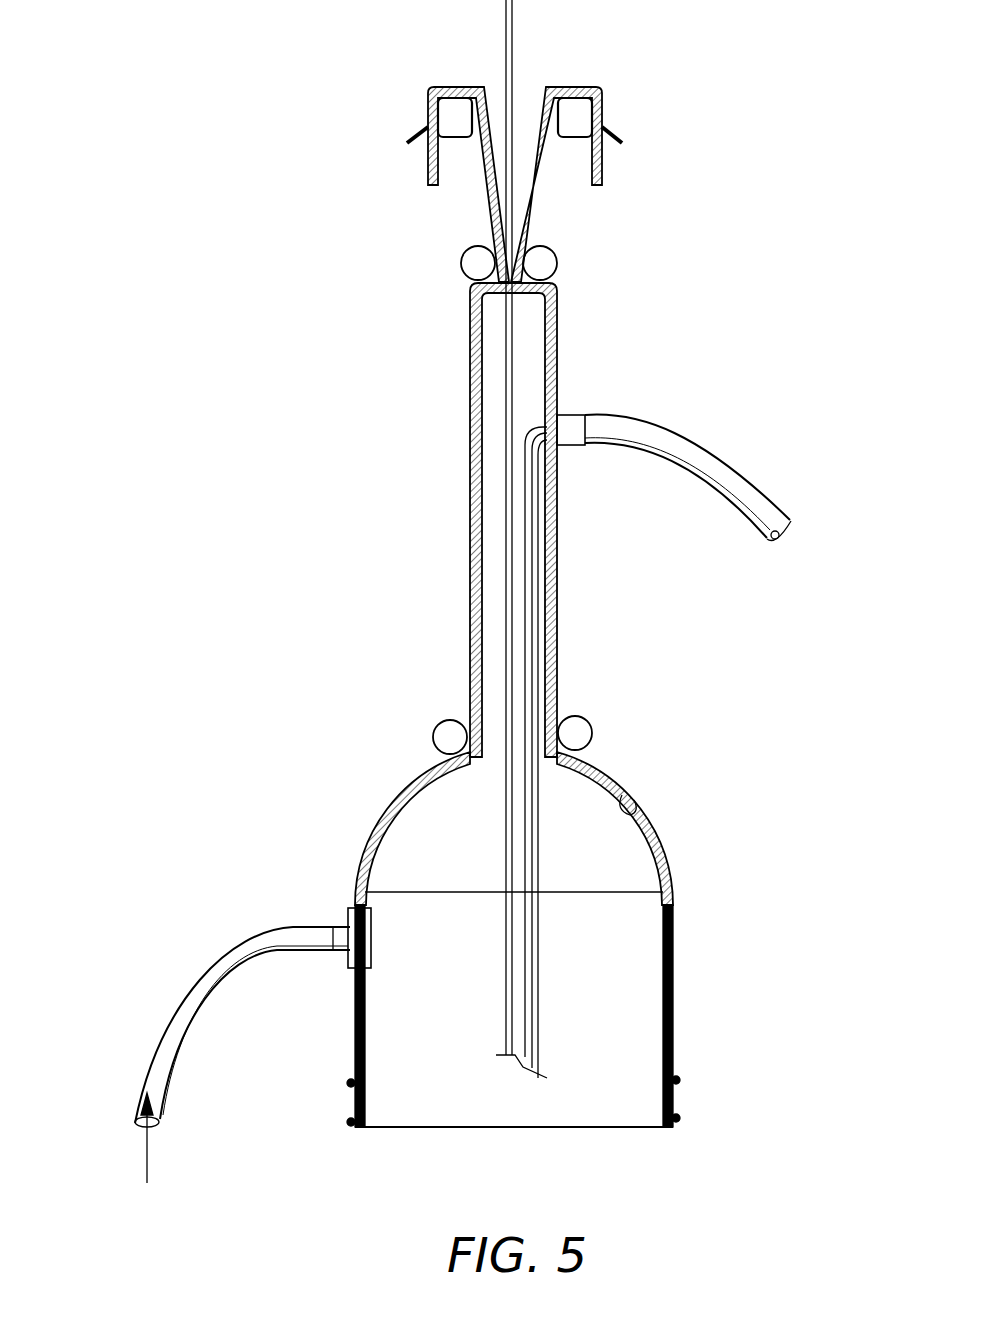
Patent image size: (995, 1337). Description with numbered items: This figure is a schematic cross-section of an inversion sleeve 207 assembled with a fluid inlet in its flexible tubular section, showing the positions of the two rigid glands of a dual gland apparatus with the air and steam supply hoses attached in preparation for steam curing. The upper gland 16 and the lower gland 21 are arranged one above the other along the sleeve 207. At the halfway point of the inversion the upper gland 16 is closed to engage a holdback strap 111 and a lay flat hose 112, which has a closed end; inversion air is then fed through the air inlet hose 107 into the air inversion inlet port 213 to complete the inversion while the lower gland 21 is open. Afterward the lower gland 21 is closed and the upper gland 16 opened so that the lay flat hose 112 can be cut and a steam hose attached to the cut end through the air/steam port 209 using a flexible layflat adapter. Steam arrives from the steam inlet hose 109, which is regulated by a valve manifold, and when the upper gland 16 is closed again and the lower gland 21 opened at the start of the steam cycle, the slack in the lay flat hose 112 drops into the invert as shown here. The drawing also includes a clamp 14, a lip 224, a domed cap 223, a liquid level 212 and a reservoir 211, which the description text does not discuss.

The holdback strap 111 is at (513, 42).
The clamp 14 is at (613, 130).
The upper gland 16 is at (546, 272).
The inversion sleeve 207 is at (468, 593).
The lay flat hose 112 is at (533, 570).
The air/steam port 209 is at (565, 430).
The steam inlet hose 109 is at (682, 427).
The lower gland 21 is at (586, 719).
The lip 224 is at (648, 803).
The dome cap 223 is at (660, 827).
The liquid level 212 is at (623, 952).
The reservoir 211 is at (684, 1034).
The air inversion inlet port 213 is at (342, 920).
The air inlet hose 107 is at (175, 1003).